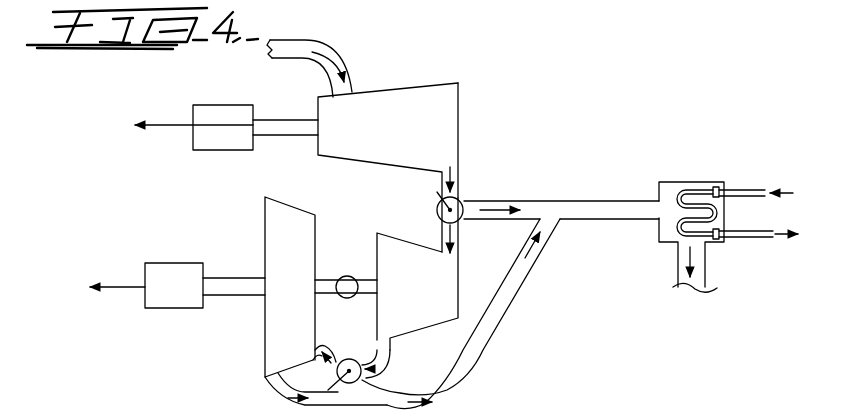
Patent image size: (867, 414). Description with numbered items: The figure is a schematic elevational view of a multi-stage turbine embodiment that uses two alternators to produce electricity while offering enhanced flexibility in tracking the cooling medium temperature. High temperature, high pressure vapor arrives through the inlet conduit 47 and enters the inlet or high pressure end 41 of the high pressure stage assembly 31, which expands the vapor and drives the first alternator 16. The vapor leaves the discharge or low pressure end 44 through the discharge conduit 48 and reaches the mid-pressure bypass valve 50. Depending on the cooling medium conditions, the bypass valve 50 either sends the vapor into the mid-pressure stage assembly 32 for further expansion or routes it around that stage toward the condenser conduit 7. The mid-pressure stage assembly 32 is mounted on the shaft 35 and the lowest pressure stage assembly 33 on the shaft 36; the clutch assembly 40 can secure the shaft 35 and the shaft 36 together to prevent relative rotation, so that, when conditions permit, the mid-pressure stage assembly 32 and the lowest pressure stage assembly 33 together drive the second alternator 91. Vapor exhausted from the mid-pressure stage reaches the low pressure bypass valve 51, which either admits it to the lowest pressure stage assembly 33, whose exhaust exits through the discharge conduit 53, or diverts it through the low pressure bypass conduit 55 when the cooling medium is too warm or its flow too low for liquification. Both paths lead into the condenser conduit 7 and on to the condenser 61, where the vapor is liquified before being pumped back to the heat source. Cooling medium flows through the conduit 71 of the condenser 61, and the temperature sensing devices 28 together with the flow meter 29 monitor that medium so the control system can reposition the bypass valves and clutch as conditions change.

The condenser conduit 7 is at (543, 201).
The first alternator 16 is at (200, 112).
The temperature sensing devices 28 is at (716, 186).
The flow meter 29 is at (745, 188).
The high pressure stage assembly 31 is at (430, 83).
The mid-pressure stage assembly 32 is at (427, 250).
The lowest pressure stage assembly 33 is at (315, 208).
The shaft 35 is at (370, 278).
The shaft 36 is at (325, 278).
The clutch assembly 40 is at (352, 278).
The inlet or high pressure end 41 is at (318, 105).
The discharge or low pressure end 44 is at (458, 135).
The inlet conduit 47 is at (325, 47).
The discharge conduit 48 is at (442, 178).
The mid-pressure bypass valve 50 is at (462, 200).
The low pressure bypass valve 51 is at (350, 359).
The discharge conduit 53 is at (283, 400).
The low pressure bypass conduit 55 is at (491, 337).
The condenser 61 is at (668, 185).
The conduit 71 is at (768, 238).
The second alternator 91 is at (150, 270).